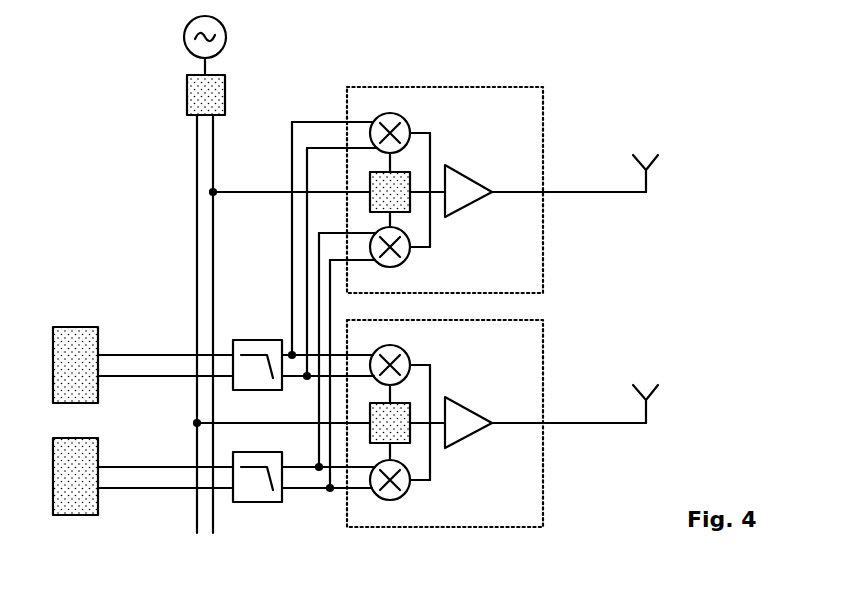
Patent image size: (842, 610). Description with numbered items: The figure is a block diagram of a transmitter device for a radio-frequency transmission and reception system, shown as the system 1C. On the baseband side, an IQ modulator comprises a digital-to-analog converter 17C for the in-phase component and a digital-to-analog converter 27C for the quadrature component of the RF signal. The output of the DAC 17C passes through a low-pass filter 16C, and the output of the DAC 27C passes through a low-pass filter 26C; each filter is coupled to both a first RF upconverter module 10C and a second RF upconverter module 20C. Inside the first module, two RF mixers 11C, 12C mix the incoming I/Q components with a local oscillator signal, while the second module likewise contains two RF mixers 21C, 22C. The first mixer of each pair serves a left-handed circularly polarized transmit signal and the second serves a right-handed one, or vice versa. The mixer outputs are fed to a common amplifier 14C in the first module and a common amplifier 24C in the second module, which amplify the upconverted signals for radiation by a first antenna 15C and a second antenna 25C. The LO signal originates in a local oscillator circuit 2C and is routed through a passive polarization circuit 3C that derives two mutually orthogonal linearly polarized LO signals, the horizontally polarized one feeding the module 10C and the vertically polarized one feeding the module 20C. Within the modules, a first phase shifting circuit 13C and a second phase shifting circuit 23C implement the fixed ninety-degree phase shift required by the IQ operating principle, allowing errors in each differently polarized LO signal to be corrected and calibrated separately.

The system 1C is at (120, 90).
The local oscillator circuit 2C is at (226, 37).
The polarization circuit 3C is at (225, 95).
The first RF upconverter module 10C is at (545, 115).
The RF mixer 11C is at (403, 121).
The RF mixer 12C is at (404, 260).
The first phase shifting circuit 13C is at (410, 178).
The amplifier 14C is at (467, 180).
The first antenna 15C is at (658, 172).
The low-pass filter 16C is at (255, 340).
The digital-to-analog converter 17C is at (77, 327).
The second RF upconverter module 20C is at (545, 347).
The RF mixer 21C is at (403, 353).
The RF mixer 22C is at (404, 493).
The second phase shifting circuit 23C is at (410, 409).
The amplifier 24C is at (467, 412).
The second antenna 25C is at (658, 402).
The low-pass filter 26C is at (262, 502).
The digital-to-analog converter 27C is at (78, 515).